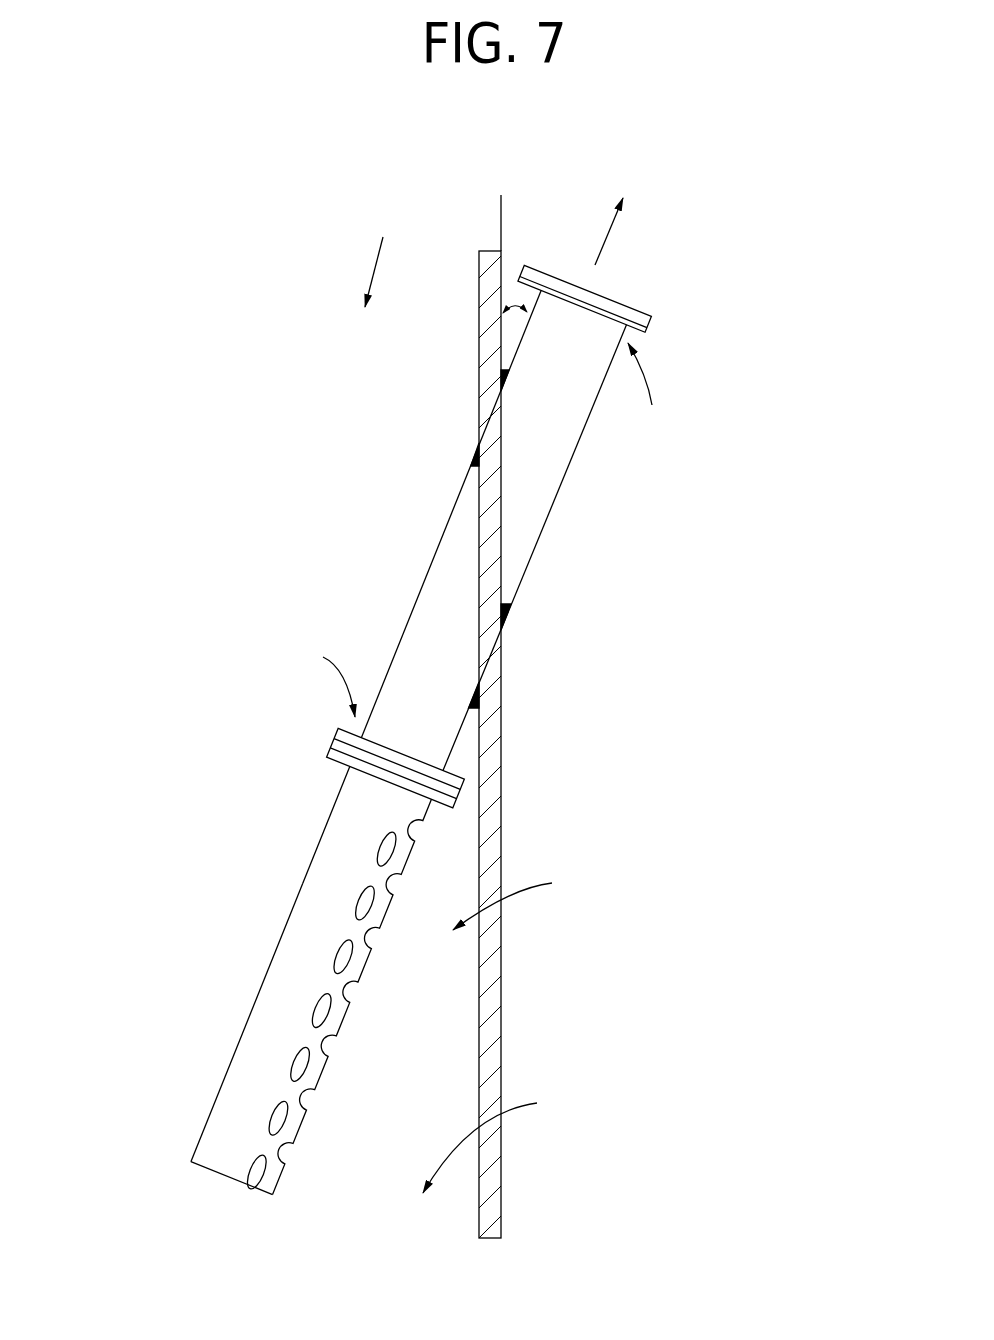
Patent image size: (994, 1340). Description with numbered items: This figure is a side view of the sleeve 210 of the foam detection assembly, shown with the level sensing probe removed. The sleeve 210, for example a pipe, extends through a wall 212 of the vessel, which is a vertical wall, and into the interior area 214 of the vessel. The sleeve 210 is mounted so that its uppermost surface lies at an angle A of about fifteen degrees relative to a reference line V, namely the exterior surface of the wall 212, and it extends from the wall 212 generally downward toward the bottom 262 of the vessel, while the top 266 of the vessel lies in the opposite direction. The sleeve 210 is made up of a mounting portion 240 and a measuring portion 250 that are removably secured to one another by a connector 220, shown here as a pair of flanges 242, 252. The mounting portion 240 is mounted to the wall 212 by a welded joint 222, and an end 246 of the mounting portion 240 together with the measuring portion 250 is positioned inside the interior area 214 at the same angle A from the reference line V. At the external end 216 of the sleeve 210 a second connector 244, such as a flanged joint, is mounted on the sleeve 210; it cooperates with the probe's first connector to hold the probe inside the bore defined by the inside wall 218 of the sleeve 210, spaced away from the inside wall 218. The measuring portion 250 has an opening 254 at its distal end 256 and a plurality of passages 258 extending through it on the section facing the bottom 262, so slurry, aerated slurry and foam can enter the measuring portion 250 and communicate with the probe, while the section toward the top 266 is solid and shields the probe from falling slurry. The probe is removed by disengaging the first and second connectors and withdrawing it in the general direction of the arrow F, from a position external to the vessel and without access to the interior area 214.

The sleeve 210 is at (670, 188).
The wall 212 is at (478, 282).
The interior area 214 is at (525, 898).
The end of the sleeve 216 is at (663, 383).
The inside wall 218 is at (534, 547).
The connector 220 is at (316, 967).
The welded joint 222 is at (497, 378).
The mounting portion 240 is at (493, 531).
The flange 242 is at (396, 767).
The second connector 244 is at (584, 298).
The end of the mounting portion 246 is at (318, 675).
The measuring portion 250 is at (311, 981).
The flange 252 is at (326, 824).
The opening 254 is at (247, 1022).
The distal end 256 is at (232, 1178).
The passages 258 is at (338, 992).
The bottom of the vessel 262 is at (500, 1138).
The top of the vessel 266 is at (392, 256).
The reference line V is at (500, 201).
The angle A is at (513, 304).
The arrow F is at (607, 243).